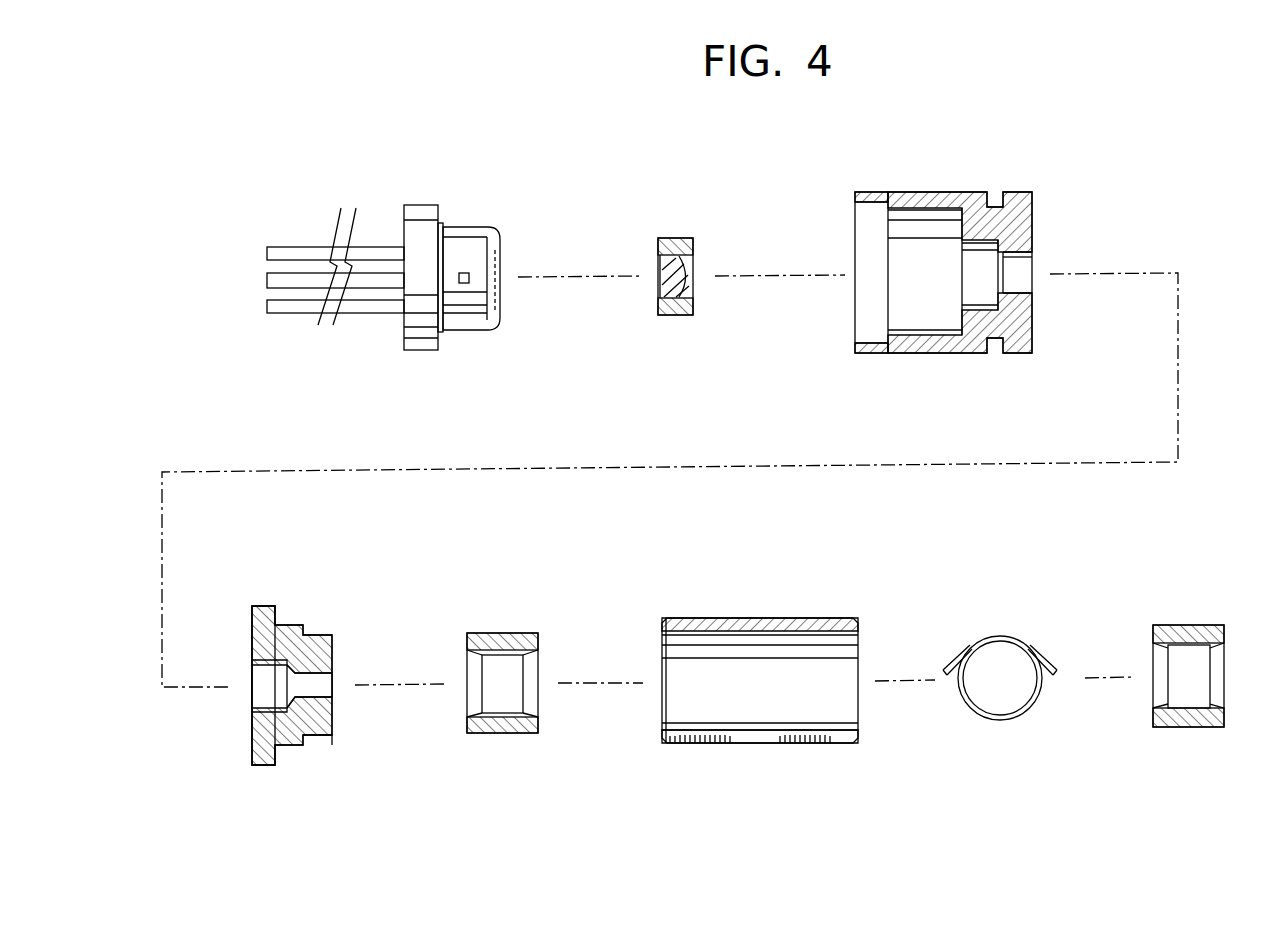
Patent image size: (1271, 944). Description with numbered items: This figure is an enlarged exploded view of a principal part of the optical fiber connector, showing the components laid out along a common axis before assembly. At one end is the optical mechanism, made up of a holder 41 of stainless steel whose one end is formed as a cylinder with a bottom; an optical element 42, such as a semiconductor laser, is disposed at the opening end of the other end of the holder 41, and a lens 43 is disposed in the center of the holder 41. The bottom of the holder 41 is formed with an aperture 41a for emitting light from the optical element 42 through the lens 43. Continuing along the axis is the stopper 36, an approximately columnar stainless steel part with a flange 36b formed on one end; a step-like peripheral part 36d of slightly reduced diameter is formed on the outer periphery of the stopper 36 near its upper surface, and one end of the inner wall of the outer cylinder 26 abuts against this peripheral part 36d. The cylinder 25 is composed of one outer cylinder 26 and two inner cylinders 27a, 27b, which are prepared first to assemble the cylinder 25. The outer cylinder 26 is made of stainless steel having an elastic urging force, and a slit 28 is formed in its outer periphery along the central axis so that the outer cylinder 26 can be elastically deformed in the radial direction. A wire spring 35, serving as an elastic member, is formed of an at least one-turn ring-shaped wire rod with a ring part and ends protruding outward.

The cylinder 25 is at (683, 750).
The outer cylinder 26 is at (858, 627).
The inner cylinder 27a is at (1195, 625).
The inner cylinder 27b is at (500, 632).
The slit 28 is at (765, 745).
The wire spring 35 is at (995, 637).
The stopper 36 is at (292, 746).
The flange 36b is at (262, 612).
The step-like peripheral part 36d is at (322, 738).
The holder 41 is at (975, 208).
The aperture 41a is at (1035, 262).
The optical element 42 is at (455, 224).
The lens 43 is at (660, 270).